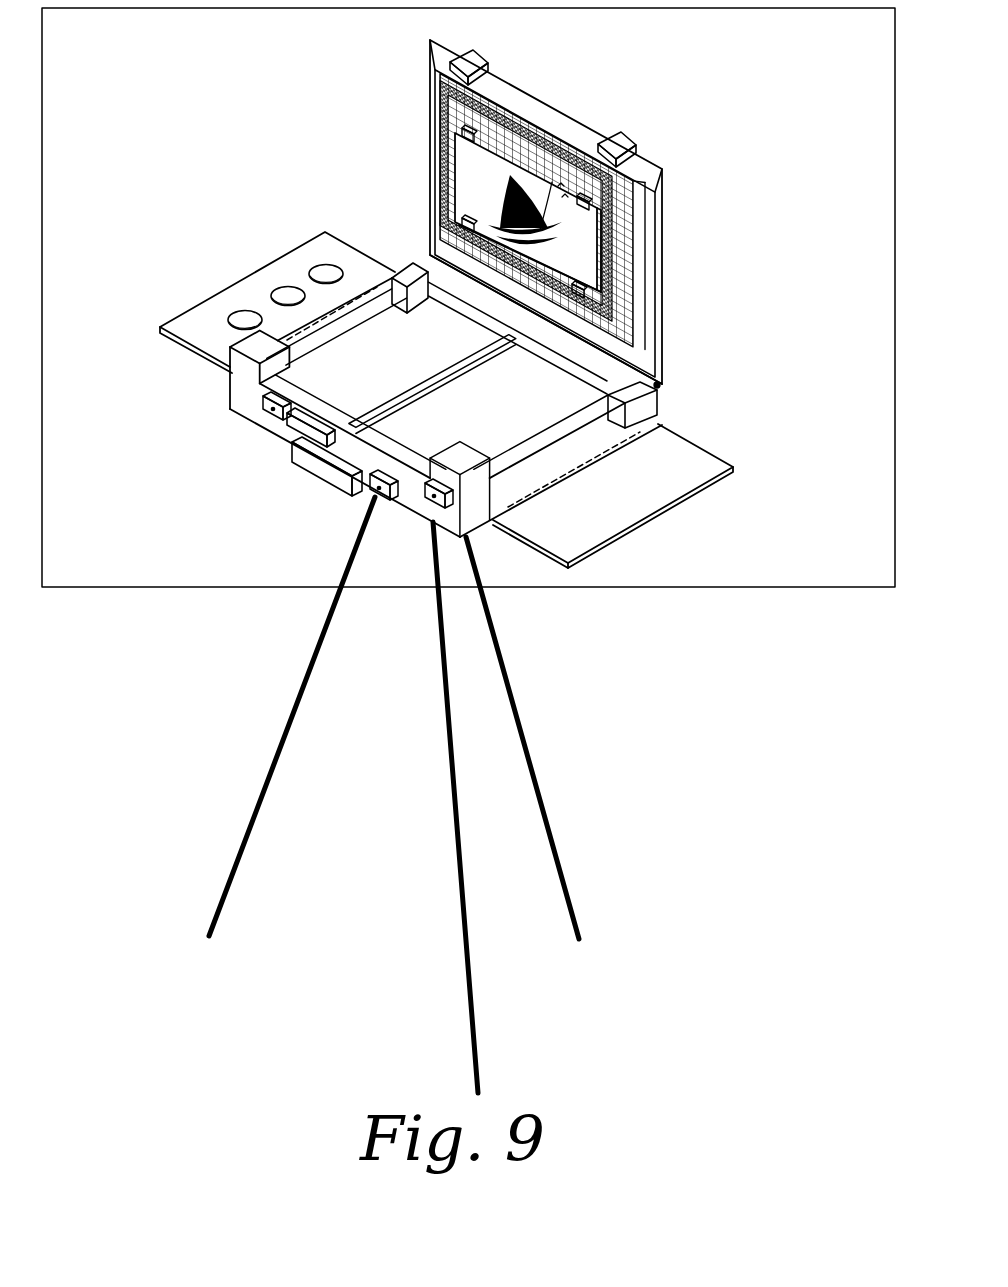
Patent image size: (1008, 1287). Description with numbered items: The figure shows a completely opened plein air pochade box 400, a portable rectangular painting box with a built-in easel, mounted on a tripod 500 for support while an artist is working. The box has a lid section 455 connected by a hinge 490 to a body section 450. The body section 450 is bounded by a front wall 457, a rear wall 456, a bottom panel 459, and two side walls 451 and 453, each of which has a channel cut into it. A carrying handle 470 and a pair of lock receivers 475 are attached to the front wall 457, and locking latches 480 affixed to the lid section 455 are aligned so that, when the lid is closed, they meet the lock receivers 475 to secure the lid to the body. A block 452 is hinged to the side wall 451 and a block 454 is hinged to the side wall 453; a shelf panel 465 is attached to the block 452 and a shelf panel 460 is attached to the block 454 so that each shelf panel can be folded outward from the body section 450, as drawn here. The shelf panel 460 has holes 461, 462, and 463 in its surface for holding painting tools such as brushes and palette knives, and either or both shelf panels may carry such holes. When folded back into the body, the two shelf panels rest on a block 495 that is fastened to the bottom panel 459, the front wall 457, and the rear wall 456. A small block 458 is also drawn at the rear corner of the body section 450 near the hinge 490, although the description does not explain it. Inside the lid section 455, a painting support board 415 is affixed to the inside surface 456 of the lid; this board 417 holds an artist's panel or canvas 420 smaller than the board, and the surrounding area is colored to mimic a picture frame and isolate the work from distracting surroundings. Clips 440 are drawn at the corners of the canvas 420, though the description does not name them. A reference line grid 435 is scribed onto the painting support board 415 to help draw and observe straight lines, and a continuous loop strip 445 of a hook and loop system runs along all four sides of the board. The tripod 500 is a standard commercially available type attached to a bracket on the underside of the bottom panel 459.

The plein air pochade box 400 is at (468, 321).
The painting support board 415 is at (591, 223).
The board 417 is at (638, 235).
The painting support board / canvas 420 is at (540, 210).
The reference line grid 435 is at (437, 137).
The clips 440 is at (559, 212).
The continuous loop strip 445 is at (455, 135).
The body section 450 is at (478, 547).
The side wall 451 is at (622, 470).
The block 452 is at (601, 498).
The side wall 453 is at (390, 260).
The block 454 is at (305, 235).
The lid section 455 is at (591, 212).
The inside surface / rear wall 456 is at (594, 116).
The front wall 457 is at (224, 374).
The rear right block 458 is at (683, 405).
The bottom panel 459 is at (405, 375).
The shelf panel 460 is at (229, 302).
The hole 461 is at (181, 270).
The hole 462 is at (229, 241).
The hole 463 is at (270, 217).
The shelf panel 465 is at (629, 496).
The carrying handle 470 is at (290, 452).
The lock receivers 475 is at (405, 571).
The locking latches 480 is at (572, 96).
The hinge 490 is at (699, 387).
The block 495 is at (432, 384).
The tripod 500 is at (438, 795).